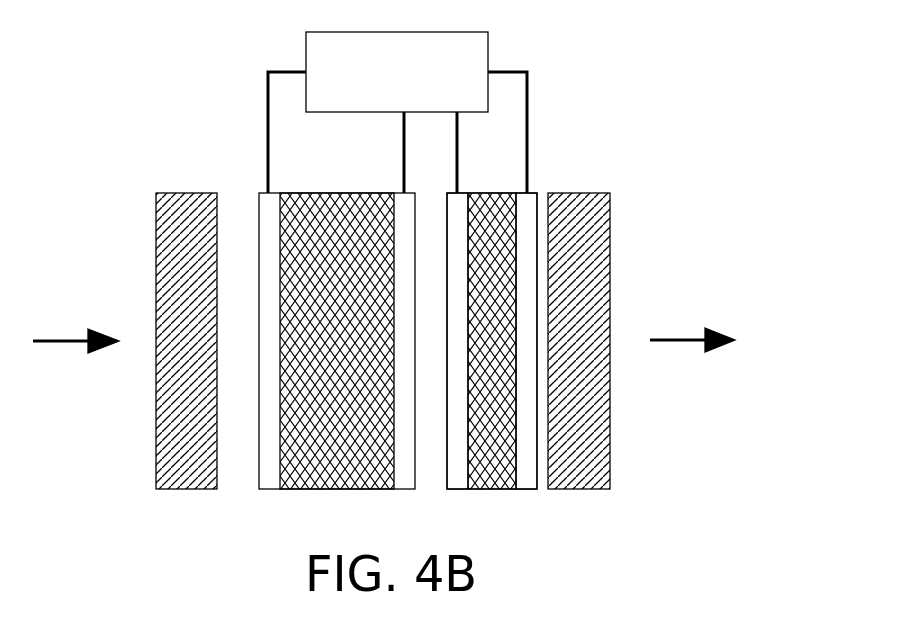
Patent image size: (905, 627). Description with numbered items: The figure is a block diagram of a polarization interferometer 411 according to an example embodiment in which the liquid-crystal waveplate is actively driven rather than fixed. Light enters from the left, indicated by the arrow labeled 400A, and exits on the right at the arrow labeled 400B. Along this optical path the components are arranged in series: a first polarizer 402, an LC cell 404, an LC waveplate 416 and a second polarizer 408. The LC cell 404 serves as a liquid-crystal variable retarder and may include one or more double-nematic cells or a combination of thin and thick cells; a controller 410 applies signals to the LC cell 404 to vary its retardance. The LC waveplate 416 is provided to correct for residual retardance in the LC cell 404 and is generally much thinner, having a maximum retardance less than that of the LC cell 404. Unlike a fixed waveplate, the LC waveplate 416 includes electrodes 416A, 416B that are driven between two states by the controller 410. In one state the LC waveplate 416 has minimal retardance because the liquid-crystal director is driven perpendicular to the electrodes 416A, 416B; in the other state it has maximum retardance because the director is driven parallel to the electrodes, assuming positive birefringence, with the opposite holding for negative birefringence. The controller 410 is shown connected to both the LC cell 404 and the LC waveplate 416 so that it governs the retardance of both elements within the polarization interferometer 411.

The controller 410 is at (304, 48).
The first polarizer 402 is at (181, 193).
The LC cell 404 is at (260, 495).
The LC waveplate 416 is at (490, 193).
The electrode 416A is at (458, 490).
The electrode 416B is at (527, 490).
The second polarizer 408 is at (578, 193).
The inlet flow 400A is at (156, 462).
The outlet flow 400B is at (610, 462).
The polarization interferometer 411 is at (661, 164).